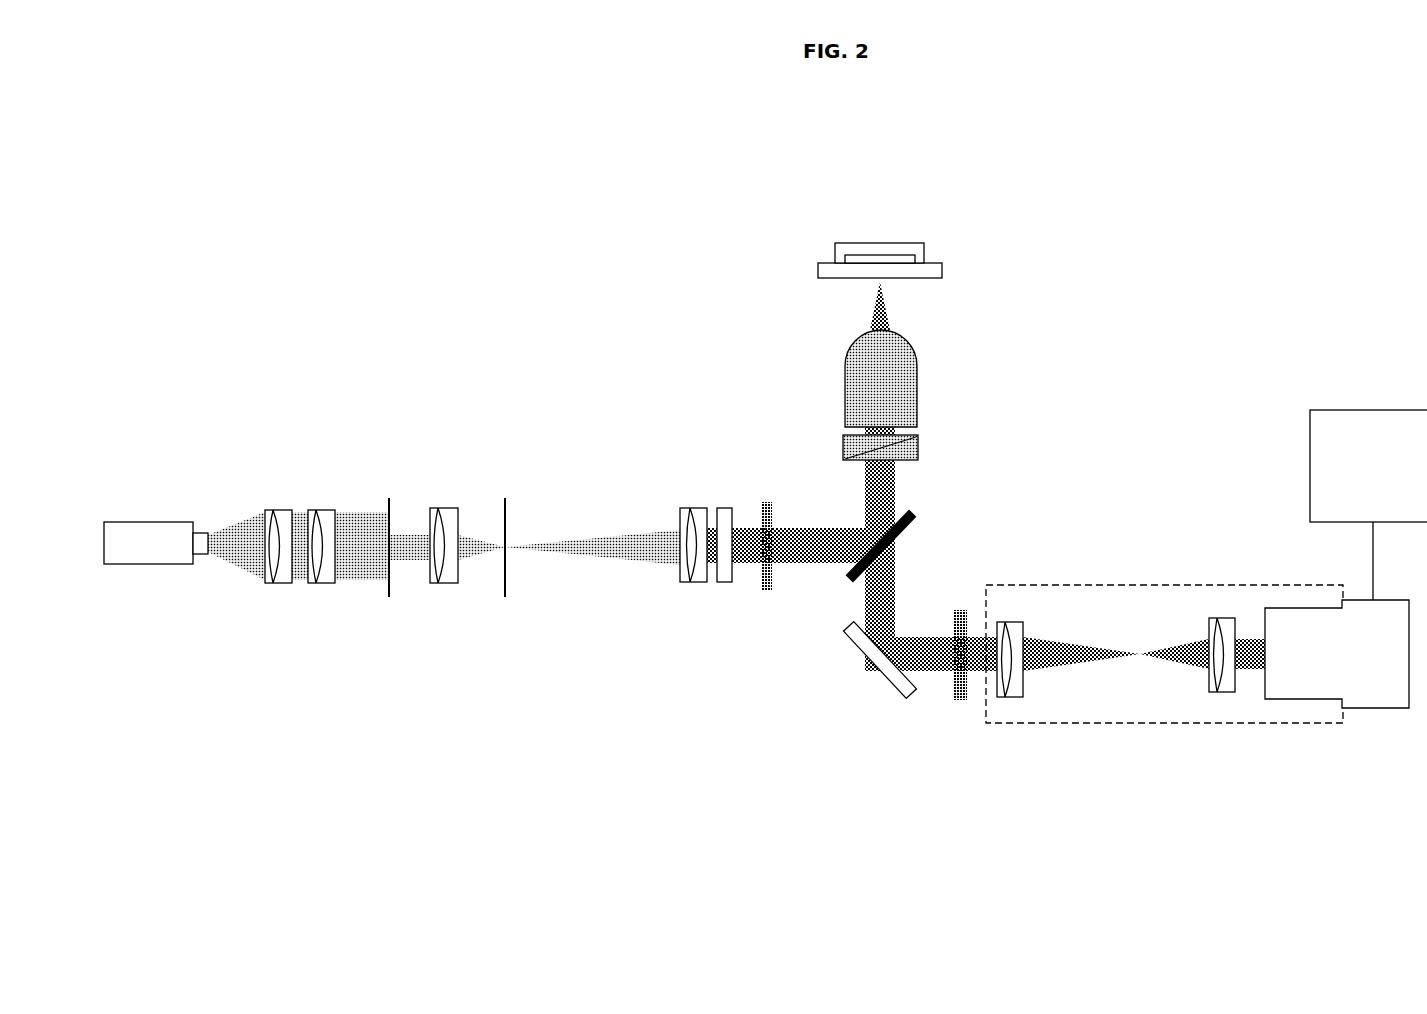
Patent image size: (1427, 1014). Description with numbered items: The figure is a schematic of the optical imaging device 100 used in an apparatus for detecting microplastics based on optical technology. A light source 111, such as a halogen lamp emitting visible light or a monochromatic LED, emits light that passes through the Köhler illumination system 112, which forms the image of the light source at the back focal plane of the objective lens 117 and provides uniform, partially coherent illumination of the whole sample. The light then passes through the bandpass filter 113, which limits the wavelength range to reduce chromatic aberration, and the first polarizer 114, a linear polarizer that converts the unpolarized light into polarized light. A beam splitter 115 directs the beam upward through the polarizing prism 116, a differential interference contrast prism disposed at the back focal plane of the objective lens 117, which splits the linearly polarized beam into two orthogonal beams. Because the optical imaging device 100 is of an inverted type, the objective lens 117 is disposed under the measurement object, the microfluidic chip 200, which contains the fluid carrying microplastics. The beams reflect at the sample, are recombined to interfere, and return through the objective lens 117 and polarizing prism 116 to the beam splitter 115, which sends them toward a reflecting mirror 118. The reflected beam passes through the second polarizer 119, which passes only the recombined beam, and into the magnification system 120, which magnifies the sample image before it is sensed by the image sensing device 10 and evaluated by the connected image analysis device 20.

The optical imaging device 100 is at (474, 316).
The light source 111 is at (150, 566).
The Köhler illumination system 112 is at (348, 585).
The bandpass filter 113 is at (725, 583).
The first polarizer 114 is at (766, 591).
The beam splitter 115 is at (860, 527).
The polarizing prism 116 is at (918, 450).
The objective lens 117 is at (918, 382).
The reflecting mirror 118 is at (868, 660).
The second polarizer 119 is at (958, 701).
The magnification system 120 is at (1143, 725).
The image sensing device 10 is at (1375, 710).
The image analysis device 20 is at (1393, 408).
The microfluidic chip 200 is at (924, 258).